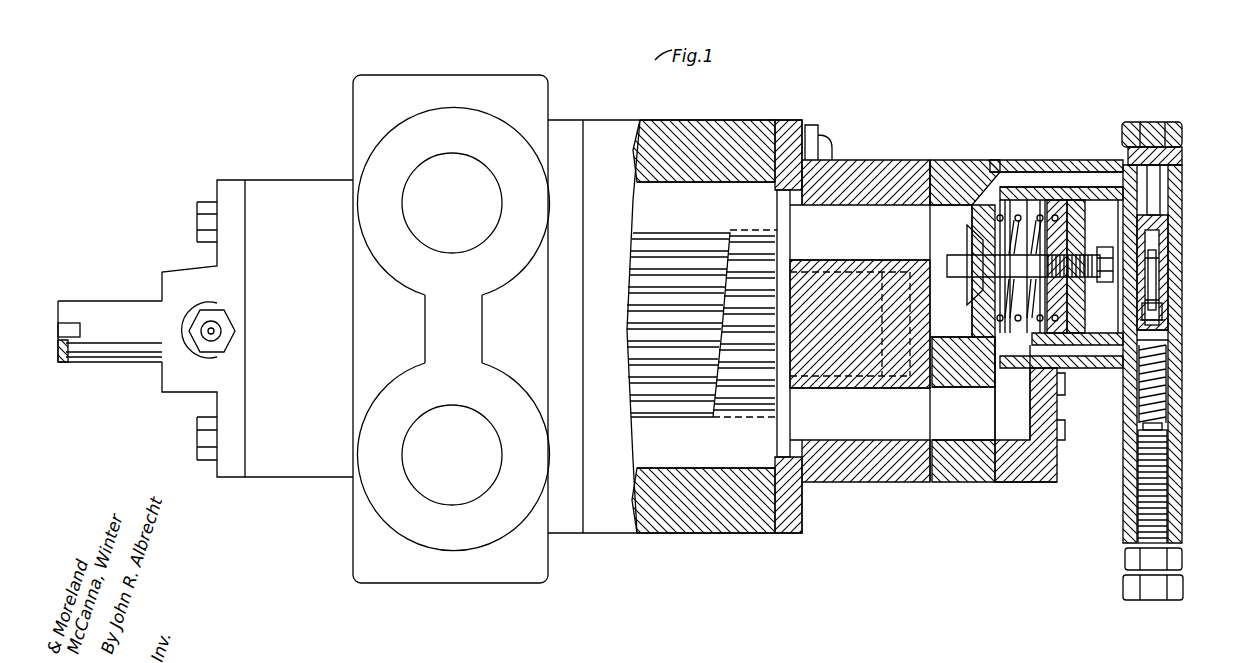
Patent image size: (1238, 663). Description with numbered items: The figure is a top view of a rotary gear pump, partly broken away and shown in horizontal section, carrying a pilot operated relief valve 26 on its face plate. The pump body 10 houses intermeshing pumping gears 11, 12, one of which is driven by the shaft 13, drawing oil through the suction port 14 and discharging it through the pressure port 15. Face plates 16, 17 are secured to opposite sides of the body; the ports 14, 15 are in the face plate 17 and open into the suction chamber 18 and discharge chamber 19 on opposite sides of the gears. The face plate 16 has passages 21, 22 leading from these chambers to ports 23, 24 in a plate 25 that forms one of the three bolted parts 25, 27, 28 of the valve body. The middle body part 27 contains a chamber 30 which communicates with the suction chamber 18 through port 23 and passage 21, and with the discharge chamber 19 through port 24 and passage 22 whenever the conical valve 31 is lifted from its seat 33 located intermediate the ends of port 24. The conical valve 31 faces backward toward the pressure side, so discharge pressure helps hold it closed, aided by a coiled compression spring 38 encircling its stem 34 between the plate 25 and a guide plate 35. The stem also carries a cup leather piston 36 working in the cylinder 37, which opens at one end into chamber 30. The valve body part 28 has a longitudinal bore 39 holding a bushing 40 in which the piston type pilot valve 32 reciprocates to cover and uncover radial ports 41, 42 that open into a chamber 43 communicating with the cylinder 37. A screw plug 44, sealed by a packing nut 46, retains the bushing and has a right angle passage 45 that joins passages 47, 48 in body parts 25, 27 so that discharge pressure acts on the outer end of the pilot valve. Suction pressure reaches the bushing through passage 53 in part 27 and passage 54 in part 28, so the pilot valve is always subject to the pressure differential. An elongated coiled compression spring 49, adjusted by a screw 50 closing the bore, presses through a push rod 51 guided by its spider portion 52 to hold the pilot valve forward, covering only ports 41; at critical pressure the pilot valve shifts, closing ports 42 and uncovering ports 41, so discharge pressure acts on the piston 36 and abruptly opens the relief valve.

The body 10 is at (724, 120).
The pumping gear 11 is at (668, 248).
The pumping gear 12 is at (784, 255).
The shaft 13 is at (118, 357).
The suction port 14 is at (453, 457).
The pressure port 15 is at (454, 201).
The face plate 16 is at (862, 160).
The face plate 17 is at (563, 121).
The suction chamber 18 is at (706, 452).
The discharge chamber 19 is at (706, 195).
The passage 21 is at (860, 414).
The passage 22 is at (860, 232).
The port 23 is at (963, 388).
The port 24 is at (951, 271).
The plate 25 is at (968, 482).
The pilot operated relief valve 26 is at (1015, 160).
The middle body part 27 is at (1057, 460).
The valve body part 28 is at (1182, 313).
The chamber 30 is at (1012, 440).
The conical valve 31 is at (966, 296).
The pilot valve 32 is at (1166, 216).
The seat 33 is at (978, 316).
The stem 34 is at (1030, 264).
The guide plate 35 is at (1056, 200).
The cup leather piston 36 is at (1095, 350).
The cylinder 37 is at (1110, 198).
The coiled compression spring 38 is at (1008, 336).
The longitudinal bore 39 is at (1172, 303).
The bushing 40 is at (1162, 205).
The radial ports 41 is at (1168, 230).
The radial ports 42 is at (1172, 258).
The chamber 43 is at (1170, 245).
The screw plug 44 is at (1145, 122).
The right angle passage 45 is at (1182, 162).
The packing nut 46 is at (1178, 147).
The passage 47 is at (968, 190).
The passage 48 is at (1035, 180).
The coiled compression spring 49 is at (1166, 385).
The screw 50 is at (1182, 470).
The push rod 51 is at (1172, 278).
The spider portion 52 is at (1162, 312).
The passage 53 is at (1078, 372).
The passage 54 is at (1117, 370).